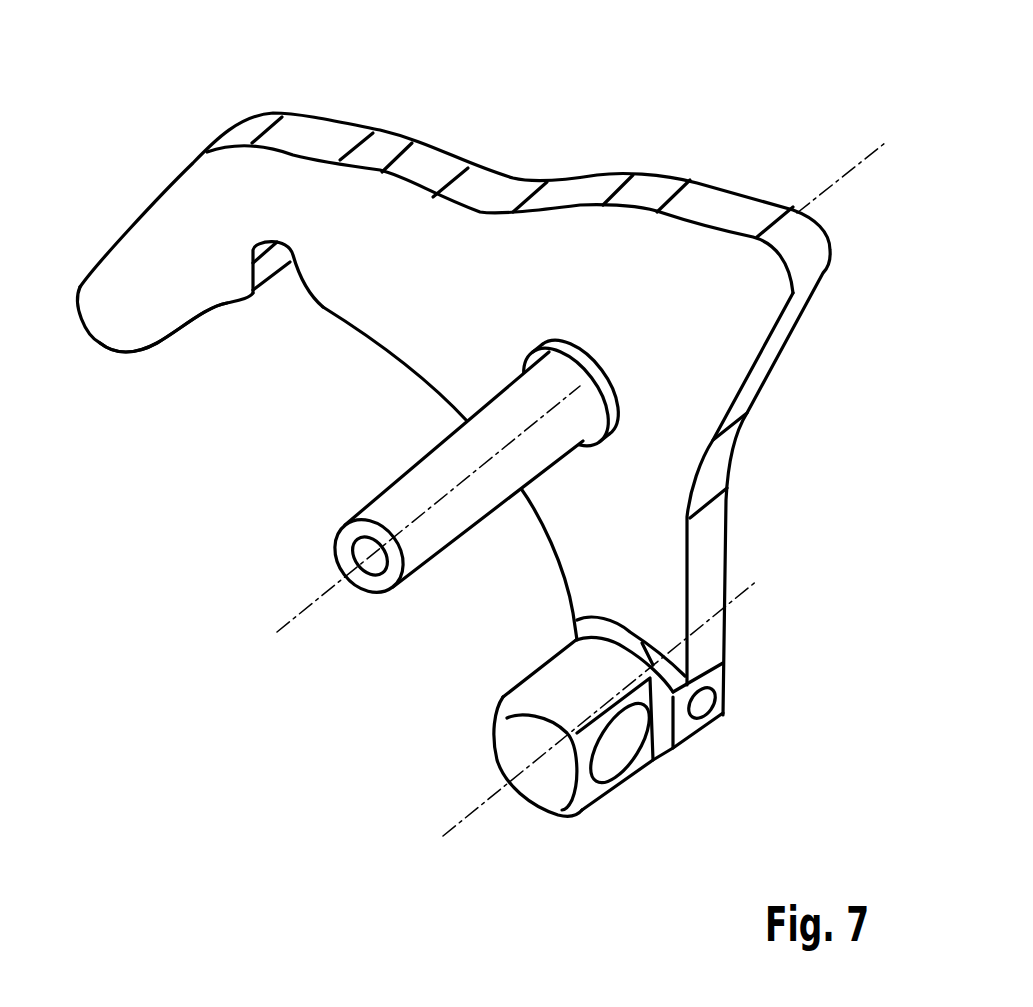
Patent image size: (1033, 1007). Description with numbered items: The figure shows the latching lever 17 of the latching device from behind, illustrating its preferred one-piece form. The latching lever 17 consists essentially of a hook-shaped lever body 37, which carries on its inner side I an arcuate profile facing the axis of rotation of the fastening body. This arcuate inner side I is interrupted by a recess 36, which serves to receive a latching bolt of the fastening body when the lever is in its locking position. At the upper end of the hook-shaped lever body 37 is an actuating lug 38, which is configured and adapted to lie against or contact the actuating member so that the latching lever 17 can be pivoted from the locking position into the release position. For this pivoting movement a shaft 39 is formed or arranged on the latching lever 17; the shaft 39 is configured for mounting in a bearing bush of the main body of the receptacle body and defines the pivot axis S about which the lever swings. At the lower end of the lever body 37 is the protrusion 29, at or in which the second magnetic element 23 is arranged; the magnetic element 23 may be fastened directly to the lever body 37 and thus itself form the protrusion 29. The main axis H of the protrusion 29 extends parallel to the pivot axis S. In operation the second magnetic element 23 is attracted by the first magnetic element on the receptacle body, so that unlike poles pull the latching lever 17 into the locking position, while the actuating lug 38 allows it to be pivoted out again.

The latching lever 17 is at (670, 112).
The hook-shaped lever body 37 is at (503, 252).
The actuating lug 38 is at (830, 250).
The recess 36 is at (292, 278).
The shaft 39 is at (403, 497).
The second magnetic element 23 is at (623, 763).
The protrusion 29 is at (693, 763).
The inner side I is at (181, 321).
The pivot axis S is at (303, 614).
The main axis H is at (468, 818).